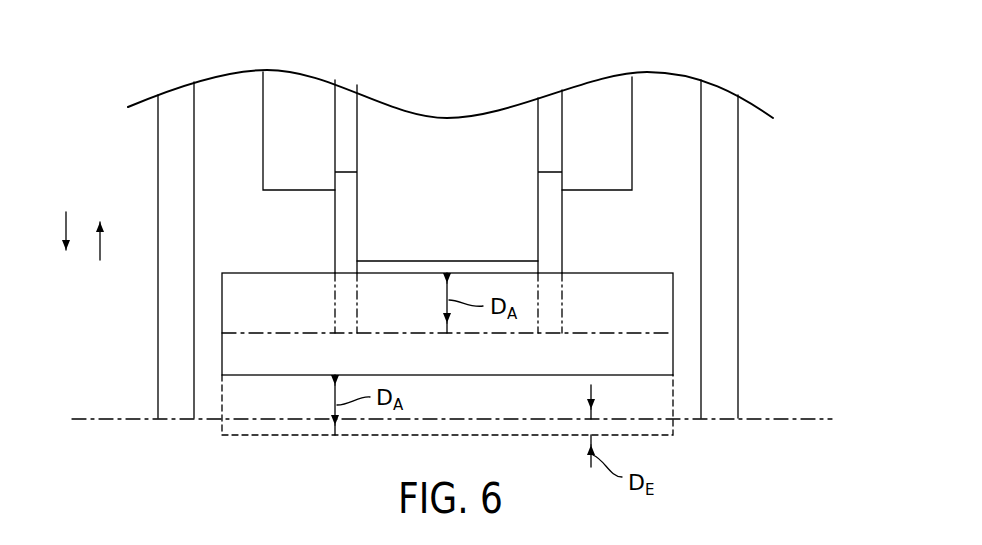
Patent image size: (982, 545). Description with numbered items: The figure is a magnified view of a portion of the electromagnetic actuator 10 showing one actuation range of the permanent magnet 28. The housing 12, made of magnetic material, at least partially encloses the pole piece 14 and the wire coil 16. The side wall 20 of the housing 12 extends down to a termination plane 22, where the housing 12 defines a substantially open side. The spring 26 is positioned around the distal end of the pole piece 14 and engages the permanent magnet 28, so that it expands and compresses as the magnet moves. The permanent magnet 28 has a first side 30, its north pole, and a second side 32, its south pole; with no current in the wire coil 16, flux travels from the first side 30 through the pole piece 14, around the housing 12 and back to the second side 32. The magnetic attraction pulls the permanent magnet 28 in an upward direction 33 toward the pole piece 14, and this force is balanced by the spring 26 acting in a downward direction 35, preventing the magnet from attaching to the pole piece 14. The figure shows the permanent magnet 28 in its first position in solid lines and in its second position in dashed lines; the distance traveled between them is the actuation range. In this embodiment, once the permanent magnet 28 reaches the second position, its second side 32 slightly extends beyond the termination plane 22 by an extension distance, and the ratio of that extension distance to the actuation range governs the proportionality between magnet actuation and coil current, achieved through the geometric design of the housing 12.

The electromagnetic actuator 10 is at (758, 194).
The housing 12 is at (746, 249).
The pole piece 14 is at (428, 155).
The wire coil 16 is at (262, 107).
The side wall 20 is at (738, 327).
The termination plane 22 is at (777, 418).
The spring 26 is at (562, 218).
The permanent magnet 28 is at (583, 290).
The first side 30 is at (655, 272).
The second side 32 is at (552, 375).
The upward direction 33 is at (101, 242).
The downward direction 35 is at (64, 228).